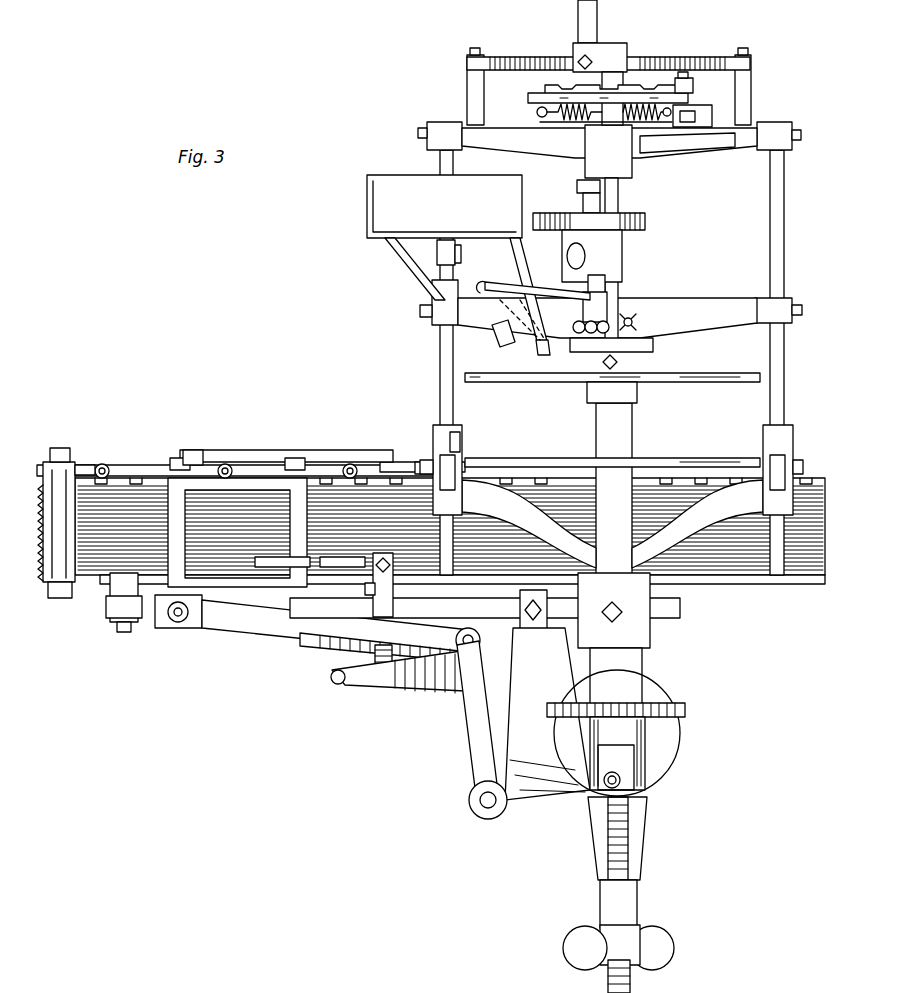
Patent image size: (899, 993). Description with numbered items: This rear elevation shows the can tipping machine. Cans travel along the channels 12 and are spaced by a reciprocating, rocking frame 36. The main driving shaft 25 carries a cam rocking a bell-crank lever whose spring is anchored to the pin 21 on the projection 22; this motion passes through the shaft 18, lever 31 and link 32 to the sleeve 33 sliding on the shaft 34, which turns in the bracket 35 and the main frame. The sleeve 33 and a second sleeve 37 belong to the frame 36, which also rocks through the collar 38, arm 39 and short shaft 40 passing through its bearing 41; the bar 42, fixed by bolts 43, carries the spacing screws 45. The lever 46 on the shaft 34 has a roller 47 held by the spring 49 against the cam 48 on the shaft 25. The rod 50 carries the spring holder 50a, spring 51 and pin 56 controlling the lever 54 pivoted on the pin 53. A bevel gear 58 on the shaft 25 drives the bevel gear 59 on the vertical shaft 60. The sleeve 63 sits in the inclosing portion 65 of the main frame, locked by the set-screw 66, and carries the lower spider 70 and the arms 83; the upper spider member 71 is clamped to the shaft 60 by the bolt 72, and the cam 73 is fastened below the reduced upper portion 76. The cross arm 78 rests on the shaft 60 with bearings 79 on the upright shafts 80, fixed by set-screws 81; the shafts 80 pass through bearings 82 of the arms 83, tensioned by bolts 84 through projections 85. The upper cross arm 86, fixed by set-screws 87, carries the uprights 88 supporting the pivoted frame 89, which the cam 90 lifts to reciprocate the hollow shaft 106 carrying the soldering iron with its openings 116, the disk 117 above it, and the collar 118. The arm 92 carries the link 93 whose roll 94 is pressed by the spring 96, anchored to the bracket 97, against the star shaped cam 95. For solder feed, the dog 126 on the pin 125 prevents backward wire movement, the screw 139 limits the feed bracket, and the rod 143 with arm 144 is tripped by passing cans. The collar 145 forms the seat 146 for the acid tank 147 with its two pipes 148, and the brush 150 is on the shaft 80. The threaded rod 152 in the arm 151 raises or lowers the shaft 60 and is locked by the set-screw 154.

The channels 12 is at (98, 578).
The shaft 18 is at (488, 808).
The pin 21 is at (334, 682).
The projection of the bracket 22 is at (408, 684).
The main driving shaft 25 is at (680, 722).
The lever 31 is at (470, 760).
The link 32 is at (345, 648).
The sleeve 33 is at (165, 628).
The shaft 34 is at (365, 640).
The bracket 35 is at (112, 620).
The frame 36 is at (185, 548).
The sleeve 37 is at (300, 625).
The collar 38 is at (393, 600).
The arm 39 is at (366, 588).
The short shaft 40 is at (340, 558).
The bearing 41 is at (282, 562).
The horizontal bar 42 is at (160, 465).
The bolts 43 is at (180, 458).
The spacing screws 45 is at (226, 464).
The lever 46 is at (542, 652).
The roller 47 is at (547, 714).
The cam 48 is at (648, 740).
The spring 49 is at (383, 684).
The rod 50 is at (112, 465).
The spring holder 50a is at (195, 450).
The spring 51 is at (320, 452).
The pin 53 is at (418, 465).
The lever 54 is at (528, 460).
The pin 56 is at (455, 430).
The bevel gear 58 is at (600, 775).
The bevel gear 59 is at (688, 704).
The shaft 60 is at (646, 772).
The sleeve 63 is at (614, 489).
The inclosing portion 65 is at (652, 642).
The set-screw 66 is at (622, 612).
The lower spider 70 is at (672, 458).
The upper spider member 71 is at (680, 382).
The bolt 72 is at (587, 393).
The cam 73 is at (653, 346).
The upper portion of shaft 76 is at (618, 190).
The cross arm 78 is at (675, 300).
The bearings 79 is at (440, 327).
The upright shafts 80 is at (440, 396).
The set-screws 81 is at (418, 312).
The bearings 82 is at (462, 438).
The arms 83 is at (612, 524).
The bolts 84 is at (426, 465).
The projections 85 is at (462, 466).
The cross arm 86 is at (495, 148).
The set-screws 87 is at (418, 132).
The uprights 88 is at (467, 95).
The frame 89 is at (505, 57).
The cam 90 is at (625, 88).
The arm 92 is at (720, 152).
The link 93 is at (712, 116).
The roll 94 is at (693, 88).
The star shaped cam 95 is at (665, 92).
The spring 96 is at (640, 155).
The bracket 97 is at (537, 110).
The shaft 106 is at (598, 22).
The openings 116 is at (586, 257).
The disk 117 is at (645, 221).
The collar 118 is at (577, 185).
The pin 125 is at (607, 296).
The dog 126 is at (605, 279).
The screw 139 is at (636, 322).
The rod 143 is at (540, 293).
The arm 144 is at (542, 352).
The collar 145 is at (437, 252).
The seat 146 is at (461, 255).
The acid tank 147 is at (444, 206).
The pipes 148 is at (403, 262).
The brush 150 is at (496, 342).
The arm 151 is at (645, 845).
The threaded rod 152 is at (650, 950).
The set-screw 154 is at (575, 945).